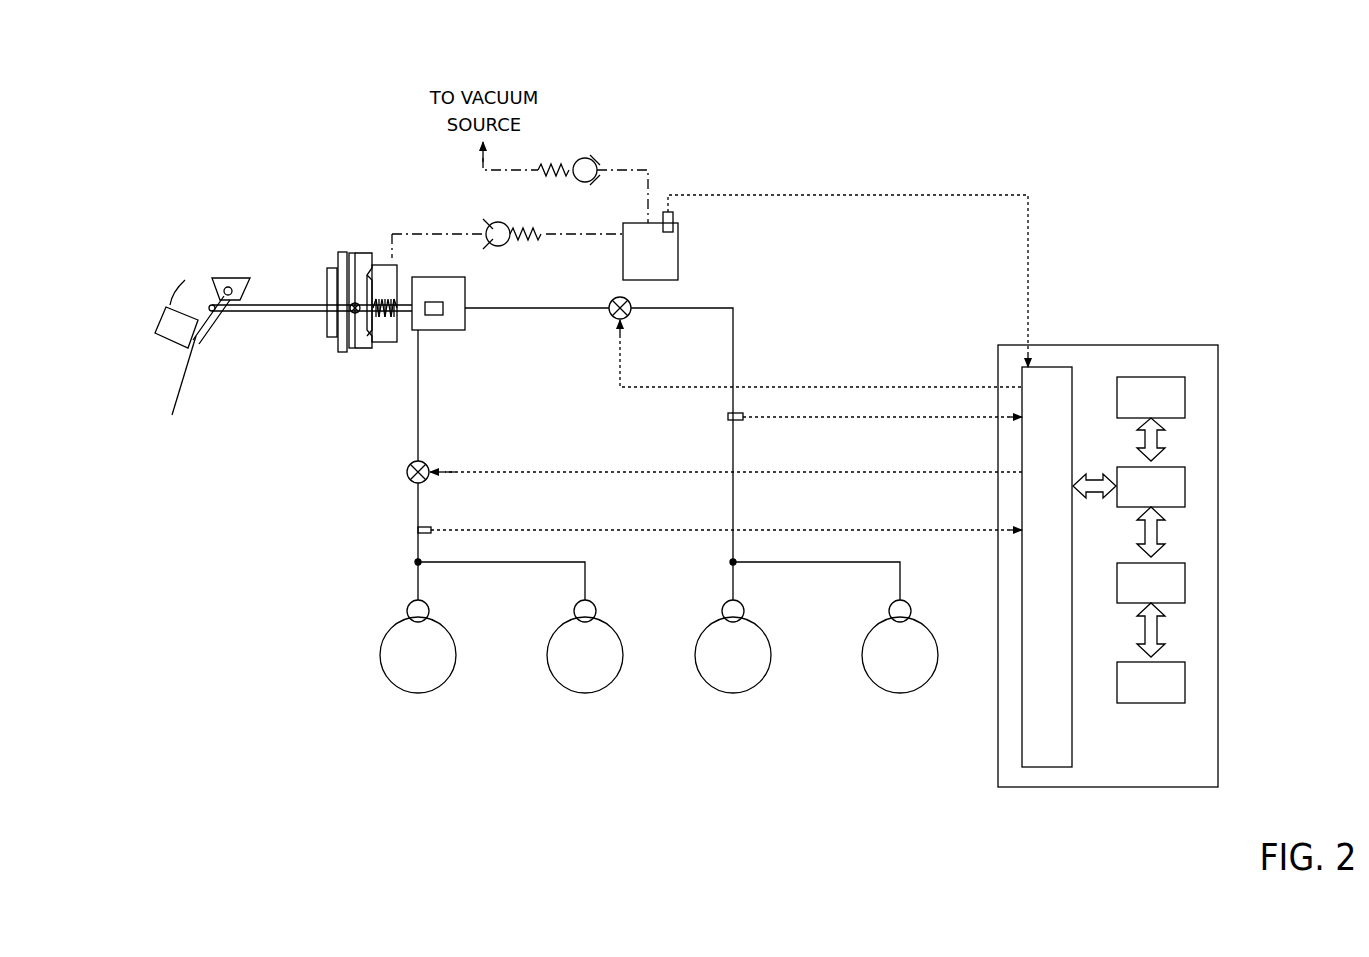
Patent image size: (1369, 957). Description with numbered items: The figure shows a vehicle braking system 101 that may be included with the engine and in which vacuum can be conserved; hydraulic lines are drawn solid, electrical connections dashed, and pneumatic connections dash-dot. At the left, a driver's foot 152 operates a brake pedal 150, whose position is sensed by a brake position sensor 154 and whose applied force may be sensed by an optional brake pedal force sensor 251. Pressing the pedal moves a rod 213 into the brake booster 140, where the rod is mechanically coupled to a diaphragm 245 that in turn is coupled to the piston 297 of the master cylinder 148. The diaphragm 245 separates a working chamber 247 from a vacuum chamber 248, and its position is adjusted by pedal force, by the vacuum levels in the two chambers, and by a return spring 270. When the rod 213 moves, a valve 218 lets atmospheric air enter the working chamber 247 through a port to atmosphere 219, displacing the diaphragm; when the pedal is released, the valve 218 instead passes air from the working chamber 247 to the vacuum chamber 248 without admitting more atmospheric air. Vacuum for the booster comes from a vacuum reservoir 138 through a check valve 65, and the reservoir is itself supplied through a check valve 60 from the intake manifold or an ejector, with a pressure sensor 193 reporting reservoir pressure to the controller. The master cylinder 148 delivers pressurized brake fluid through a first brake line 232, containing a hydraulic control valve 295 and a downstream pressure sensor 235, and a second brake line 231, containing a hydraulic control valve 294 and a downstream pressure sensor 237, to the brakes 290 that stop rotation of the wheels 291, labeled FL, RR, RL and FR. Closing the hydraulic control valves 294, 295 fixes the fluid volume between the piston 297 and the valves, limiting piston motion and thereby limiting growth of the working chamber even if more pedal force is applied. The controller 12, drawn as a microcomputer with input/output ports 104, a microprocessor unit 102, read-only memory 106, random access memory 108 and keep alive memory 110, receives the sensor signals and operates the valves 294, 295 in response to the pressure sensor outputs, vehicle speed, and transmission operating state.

The braking system 101 is at (1134, 111).
The controller 12 is at (1219, 347).
The input/output ports 104 is at (1073, 375).
The read-only memory 106 is at (1186, 396).
The microprocessor unit 102 is at (1186, 486).
The random access memory 108 is at (1186, 584).
The keep alive memory 110 is at (1186, 683).
The check valve 60 is at (581, 182).
The check valve 65 is at (502, 246).
The vacuum reservoir 138 is at (623, 268).
The pressure sensor 193 is at (674, 222).
The brake position sensor 154 is at (222, 286).
The foot 152 is at (170, 318).
The brake pedal 150 is at (205, 335).
The brake pedal force sensor 251 is at (171, 388).
The rod 213 is at (296, 304).
The brake booster 140 is at (328, 322).
The working chamber 247 is at (342, 268).
The port to atmosphere 219 is at (360, 258).
The valve 218 is at (352, 320).
The return spring 270 is at (384, 336).
The diaphragm 245 is at (380, 300).
The vacuum chamber 248 is at (387, 300).
The master cylinder 148 is at (440, 330).
The piston 297 is at (443, 303).
The first brake line 232 is at (500, 310).
The hydraulic control valve 295 is at (630, 316).
The pressure sensor 235 is at (743, 421).
The second brake line 231 is at (417, 405).
The hydraulic control valve 294 is at (426, 479).
The pressure sensor 237 is at (431, 532).
The brakes 290 is at (410, 603).
The wheels 291 is at (392, 678).